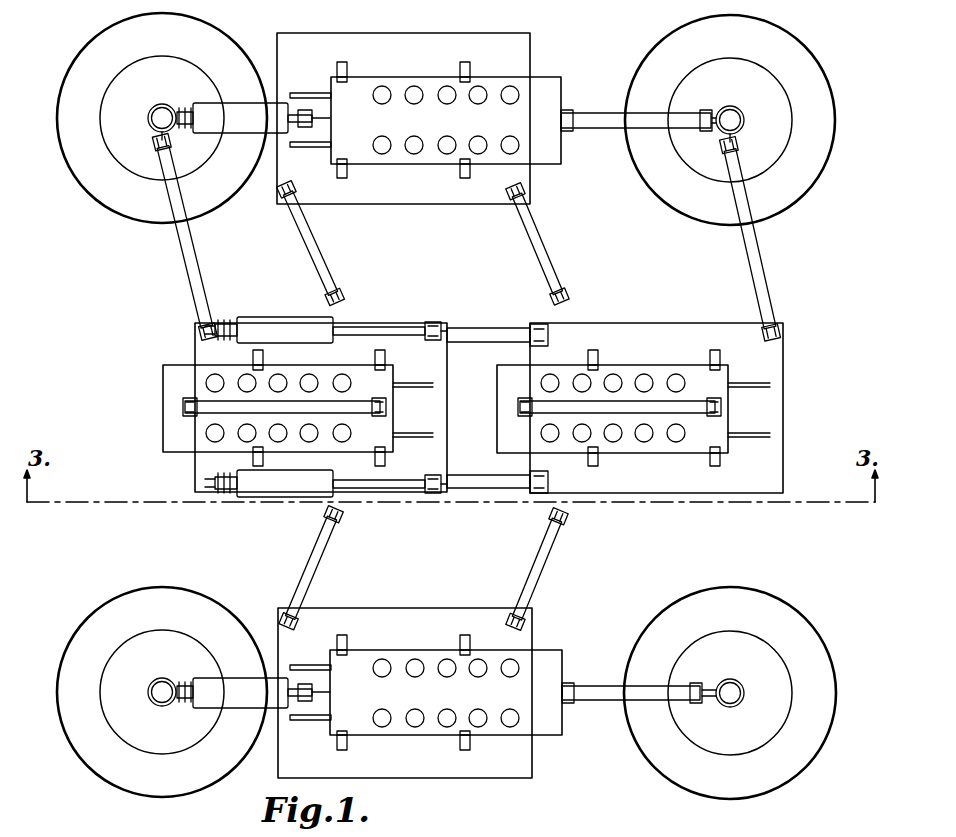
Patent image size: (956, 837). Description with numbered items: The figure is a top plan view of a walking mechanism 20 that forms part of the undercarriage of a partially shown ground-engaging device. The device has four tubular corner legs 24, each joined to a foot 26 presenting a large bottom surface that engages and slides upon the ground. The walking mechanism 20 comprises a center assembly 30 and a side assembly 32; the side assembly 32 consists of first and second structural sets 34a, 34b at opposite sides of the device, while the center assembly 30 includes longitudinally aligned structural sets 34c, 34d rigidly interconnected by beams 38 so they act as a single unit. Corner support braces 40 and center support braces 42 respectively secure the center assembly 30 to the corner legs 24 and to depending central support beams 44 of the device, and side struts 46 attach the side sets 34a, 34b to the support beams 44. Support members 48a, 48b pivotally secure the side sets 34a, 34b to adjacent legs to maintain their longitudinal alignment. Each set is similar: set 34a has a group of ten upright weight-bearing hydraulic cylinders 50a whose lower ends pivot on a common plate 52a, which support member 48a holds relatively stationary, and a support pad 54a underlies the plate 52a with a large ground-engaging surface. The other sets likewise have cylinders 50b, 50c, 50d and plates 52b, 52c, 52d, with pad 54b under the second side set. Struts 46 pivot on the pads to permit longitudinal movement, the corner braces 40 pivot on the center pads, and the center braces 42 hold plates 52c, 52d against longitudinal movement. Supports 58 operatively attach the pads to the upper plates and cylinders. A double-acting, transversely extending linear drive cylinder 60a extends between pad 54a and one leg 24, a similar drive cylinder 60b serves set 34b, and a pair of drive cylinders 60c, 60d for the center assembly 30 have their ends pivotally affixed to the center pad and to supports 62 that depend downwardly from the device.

The walking mechanism 20 is at (88, 269).
The tubular corner legs 24 is at (150, 104).
The foot 26 is at (78, 62).
The center assembly 30 is at (176, 347).
The side assembly 32 is at (551, 40).
The first structural set 34a is at (412, 602).
The second structural set 34b is at (456, 34).
The structural set 34c is at (386, 312).
The structural set 34d is at (784, 368).
The beams 38 is at (484, 332).
The corner support braces 40 is at (194, 266).
The center support braces 42 is at (372, 410).
The central support beams 44 is at (340, 286).
The side struts 46 is at (312, 244).
The support member 48a is at (592, 684).
The support member 48b is at (600, 130).
The hydraulic cylinders 50a is at (418, 676).
The hydraulic cylinders 50b is at (418, 104).
The hydraulic cylinders 50c is at (312, 376).
The hydraulic cylinders 50d is at (634, 376).
The common plate 52a is at (552, 730).
The plate 52b is at (556, 92).
The plate 52c is at (176, 448).
The plate 52d is at (738, 444).
The support pad 54a is at (452, 774).
The support pad 54b is at (352, 32).
The supports 58 is at (347, 64).
The drive cylinder 60a is at (246, 702).
The drive cylinder 60b is at (234, 108).
The drive cylinder 60c is at (282, 324).
The drive cylinder 60d is at (266, 492).
The supports 62 is at (226, 318).